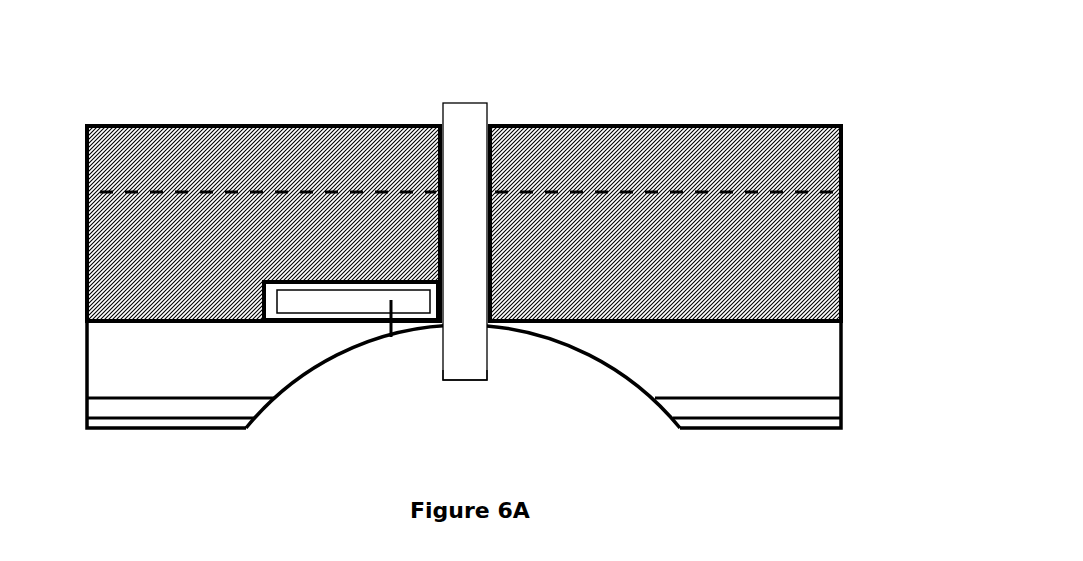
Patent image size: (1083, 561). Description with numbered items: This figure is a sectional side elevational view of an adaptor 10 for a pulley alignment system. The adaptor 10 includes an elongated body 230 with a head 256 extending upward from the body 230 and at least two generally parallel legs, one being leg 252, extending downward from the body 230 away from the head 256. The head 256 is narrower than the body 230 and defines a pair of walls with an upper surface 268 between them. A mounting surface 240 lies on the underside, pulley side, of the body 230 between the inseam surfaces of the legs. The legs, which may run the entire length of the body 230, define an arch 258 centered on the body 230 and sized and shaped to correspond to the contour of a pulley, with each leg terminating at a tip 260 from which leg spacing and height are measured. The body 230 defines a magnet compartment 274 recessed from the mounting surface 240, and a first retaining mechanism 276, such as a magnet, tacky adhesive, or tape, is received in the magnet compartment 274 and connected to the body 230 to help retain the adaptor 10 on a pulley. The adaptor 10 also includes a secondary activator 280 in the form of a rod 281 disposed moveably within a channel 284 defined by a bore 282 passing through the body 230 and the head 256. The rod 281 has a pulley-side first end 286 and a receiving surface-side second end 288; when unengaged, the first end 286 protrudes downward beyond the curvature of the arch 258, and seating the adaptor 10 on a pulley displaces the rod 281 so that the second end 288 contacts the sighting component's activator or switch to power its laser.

The adaptor 10 is at (710, 67).
The elongated body 230 is at (793, 255).
The mounting surface 240 is at (120, 323).
The leg 252 is at (795, 366).
The head 256 is at (328, 125).
The arch 258 is at (585, 355).
The tip 260 is at (773, 422).
The upper surface 268 is at (565, 125).
The magnet compartment 274 is at (287, 300).
The first retaining mechanism 276 is at (389, 334).
The secondary activator 280 is at (462, 122).
The rod 281 is at (461, 368).
The bore 282 is at (490, 125).
The channel 284 is at (493, 212).
The first end 286 is at (471, 358).
The second end 288 is at (450, 122).